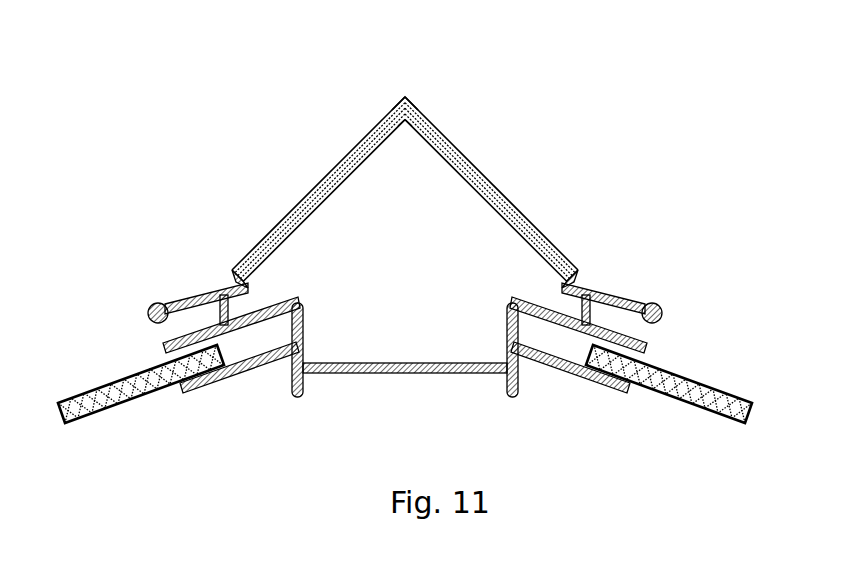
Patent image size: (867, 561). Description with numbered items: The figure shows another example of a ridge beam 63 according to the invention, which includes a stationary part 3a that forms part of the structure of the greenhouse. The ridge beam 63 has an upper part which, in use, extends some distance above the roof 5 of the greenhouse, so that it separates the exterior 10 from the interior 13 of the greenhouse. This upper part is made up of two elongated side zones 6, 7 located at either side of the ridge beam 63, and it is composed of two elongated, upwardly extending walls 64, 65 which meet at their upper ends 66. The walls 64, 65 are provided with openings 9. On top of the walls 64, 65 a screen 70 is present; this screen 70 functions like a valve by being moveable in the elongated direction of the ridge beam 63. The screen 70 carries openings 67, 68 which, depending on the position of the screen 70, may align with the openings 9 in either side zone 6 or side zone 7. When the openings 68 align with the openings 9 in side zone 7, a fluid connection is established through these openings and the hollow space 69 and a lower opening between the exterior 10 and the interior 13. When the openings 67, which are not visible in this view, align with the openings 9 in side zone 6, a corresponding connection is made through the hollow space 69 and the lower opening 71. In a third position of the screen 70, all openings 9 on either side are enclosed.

The exterior 10 is at (149, 138).
The interior 13 is at (590, 470).
The stationary part 3a is at (168, 305).
The ridge beam 63 is at (612, 295).
The roof 5 is at (662, 387).
The side zone 6 is at (232, 265).
The side zone 7 is at (513, 233).
The opening 9 is at (345, 262).
The wall 64 is at (230, 270).
The wall 65 is at (557, 267).
The upper ends 66 is at (403, 118).
The opening 67 is at (327, 180).
The opening 68 is at (490, 210).
The hollow space 69 is at (270, 240).
The screen 70 is at (428, 122).
The lower opening 71 is at (370, 365).